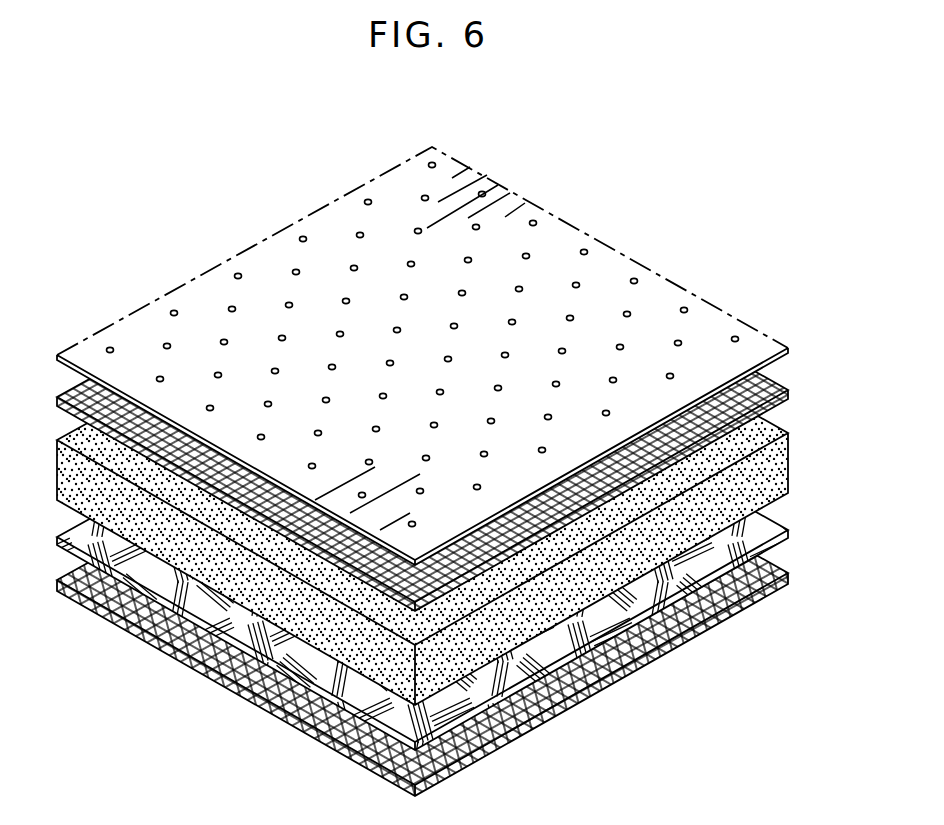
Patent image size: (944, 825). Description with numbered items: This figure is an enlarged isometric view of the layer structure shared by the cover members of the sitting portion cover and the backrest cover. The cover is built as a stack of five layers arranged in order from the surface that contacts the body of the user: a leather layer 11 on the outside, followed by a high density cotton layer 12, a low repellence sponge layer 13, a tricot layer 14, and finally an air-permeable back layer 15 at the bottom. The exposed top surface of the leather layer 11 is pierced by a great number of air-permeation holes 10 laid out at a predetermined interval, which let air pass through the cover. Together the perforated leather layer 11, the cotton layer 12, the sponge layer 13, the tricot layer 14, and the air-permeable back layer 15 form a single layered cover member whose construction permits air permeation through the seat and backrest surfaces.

The air-permeation hole 10 is at (222, 337).
The leather layer 11 is at (753, 337).
The high density cotton layer 12 is at (772, 385).
The low repellence sponge layer 13 is at (757, 440).
The tricot layer 14 is at (757, 533).
The air-permeable back layer 15 is at (753, 570).